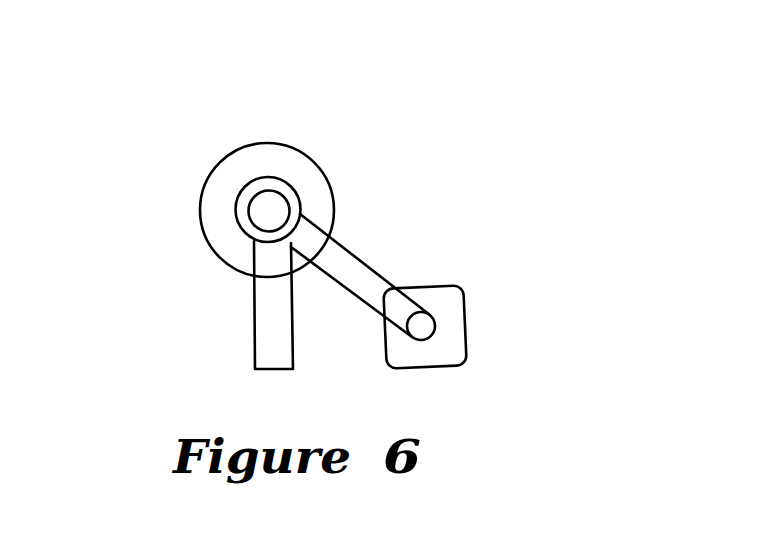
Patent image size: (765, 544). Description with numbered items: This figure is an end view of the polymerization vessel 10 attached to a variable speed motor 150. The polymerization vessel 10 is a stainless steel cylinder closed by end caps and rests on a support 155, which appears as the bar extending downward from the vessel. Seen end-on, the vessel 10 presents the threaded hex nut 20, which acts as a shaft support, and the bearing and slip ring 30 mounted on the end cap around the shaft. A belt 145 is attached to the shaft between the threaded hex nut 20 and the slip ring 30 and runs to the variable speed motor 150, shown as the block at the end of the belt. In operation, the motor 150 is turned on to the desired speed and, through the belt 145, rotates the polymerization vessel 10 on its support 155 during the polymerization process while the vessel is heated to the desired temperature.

The polymerization vessel 10 is at (328, 170).
The threaded hex nut 20 is at (297, 208).
The bearing and slip ring 30 is at (248, 186).
The belt 145 is at (362, 257).
The variable speed motor 150 is at (466, 326).
The support 155 is at (253, 293).